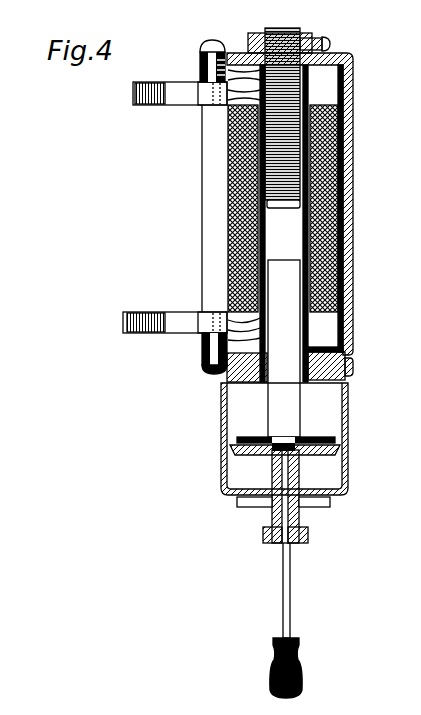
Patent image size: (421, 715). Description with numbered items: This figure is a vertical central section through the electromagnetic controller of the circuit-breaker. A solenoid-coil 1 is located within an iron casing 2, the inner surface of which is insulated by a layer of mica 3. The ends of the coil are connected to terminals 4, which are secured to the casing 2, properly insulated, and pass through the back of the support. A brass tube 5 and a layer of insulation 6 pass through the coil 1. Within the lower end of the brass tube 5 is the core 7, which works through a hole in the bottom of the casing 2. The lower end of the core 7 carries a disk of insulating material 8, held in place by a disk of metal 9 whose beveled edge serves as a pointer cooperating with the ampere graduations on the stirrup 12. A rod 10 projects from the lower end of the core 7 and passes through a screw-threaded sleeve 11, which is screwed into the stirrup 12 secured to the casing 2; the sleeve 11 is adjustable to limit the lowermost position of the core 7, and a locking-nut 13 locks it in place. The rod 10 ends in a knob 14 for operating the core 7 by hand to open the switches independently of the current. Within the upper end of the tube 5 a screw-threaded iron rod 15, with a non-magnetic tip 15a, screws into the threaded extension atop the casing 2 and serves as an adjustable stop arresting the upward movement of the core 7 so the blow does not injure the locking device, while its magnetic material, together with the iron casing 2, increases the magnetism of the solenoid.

The solenoid-coil 1 is at (229, 233).
The iron casing 2 is at (354, 259).
The layer of mica 3 is at (338, 326).
The terminals 4 is at (192, 120).
The brass tube 5 is at (303, 243).
The layer of insulation 6 is at (308, 88).
The core 7 is at (290, 407).
The disk of insulating material 8 is at (247, 434).
The disk of metal 9 is at (253, 455).
The rod 10 is at (290, 582).
The screw-threaded sleeve 11 is at (325, 470).
The stirrup 12 is at (221, 463).
The locking-nut 13 is at (305, 519).
The knob 14 is at (302, 681).
The screw-threaded iron rod 15 is at (292, 20).
The tip 15a is at (285, 208).